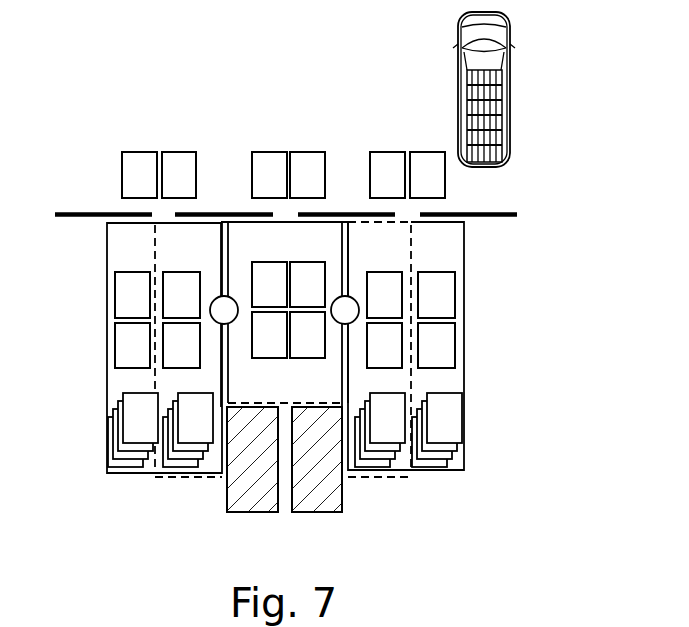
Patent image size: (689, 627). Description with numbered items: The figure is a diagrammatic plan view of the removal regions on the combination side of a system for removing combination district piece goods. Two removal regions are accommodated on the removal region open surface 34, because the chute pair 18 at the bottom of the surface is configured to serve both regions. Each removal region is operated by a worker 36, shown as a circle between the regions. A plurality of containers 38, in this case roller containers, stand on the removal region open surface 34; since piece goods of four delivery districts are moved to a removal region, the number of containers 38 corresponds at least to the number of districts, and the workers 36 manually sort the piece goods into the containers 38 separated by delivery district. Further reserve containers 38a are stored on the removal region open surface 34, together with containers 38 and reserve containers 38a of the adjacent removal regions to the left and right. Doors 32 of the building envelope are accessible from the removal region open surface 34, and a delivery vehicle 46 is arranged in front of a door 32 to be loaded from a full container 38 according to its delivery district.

The chute pair 18 is at (237, 503).
The door 32 is at (213, 212).
The removal region open surface 34 is at (172, 478).
The worker 36 is at (213, 298).
The container 38 is at (178, 165).
The reserve container 38a is at (400, 405).
The delivery vehicle 46 is at (508, 80).